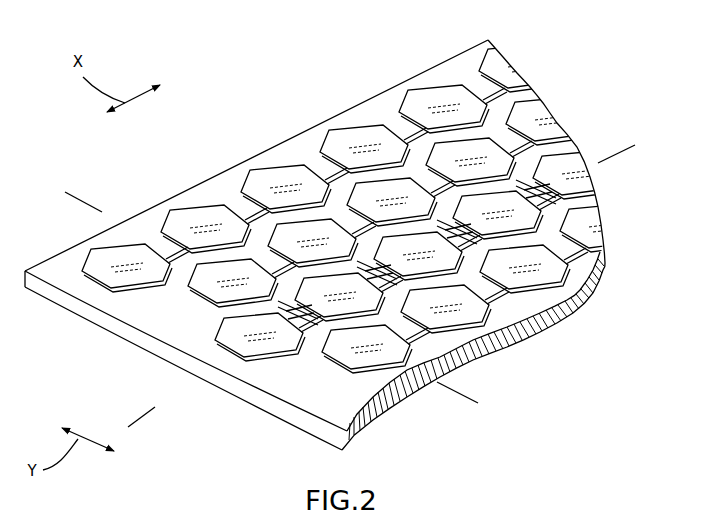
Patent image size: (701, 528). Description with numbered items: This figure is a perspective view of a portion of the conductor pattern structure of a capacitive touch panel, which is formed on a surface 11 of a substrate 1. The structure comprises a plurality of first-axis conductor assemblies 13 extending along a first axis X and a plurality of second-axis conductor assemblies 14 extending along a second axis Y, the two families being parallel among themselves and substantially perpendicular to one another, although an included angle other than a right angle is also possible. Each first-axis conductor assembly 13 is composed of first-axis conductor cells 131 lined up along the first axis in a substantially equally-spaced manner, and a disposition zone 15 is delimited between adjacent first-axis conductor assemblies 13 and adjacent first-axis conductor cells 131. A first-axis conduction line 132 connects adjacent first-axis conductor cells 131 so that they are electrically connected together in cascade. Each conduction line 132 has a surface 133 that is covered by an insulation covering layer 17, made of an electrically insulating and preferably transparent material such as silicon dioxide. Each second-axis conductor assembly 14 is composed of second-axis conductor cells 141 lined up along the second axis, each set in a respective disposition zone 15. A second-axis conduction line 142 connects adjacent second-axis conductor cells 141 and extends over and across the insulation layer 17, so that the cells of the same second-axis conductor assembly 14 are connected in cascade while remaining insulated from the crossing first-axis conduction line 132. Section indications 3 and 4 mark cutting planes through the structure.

The substrate 1 is at (337, 232).
The surface 11 is at (372, 107).
The first-axis conductor assembly 13 is at (336, 244).
The first-axis conductor cell 131 is at (258, 195).
The first-axis conduction line 132 is at (243, 199).
The surface of the conduction line 133 is at (214, 200).
The second-axis conductor assembly 14 is at (364, 261).
The second-axis conductor cell 141 is at (292, 310).
The second-axis conduction line 142 is at (296, 318).
The disposition zone 15 is at (171, 288).
The insulation covering layer 17 is at (208, 363).
The section line III 3 is at (83, 202).
The section line IV 4 is at (623, 158).